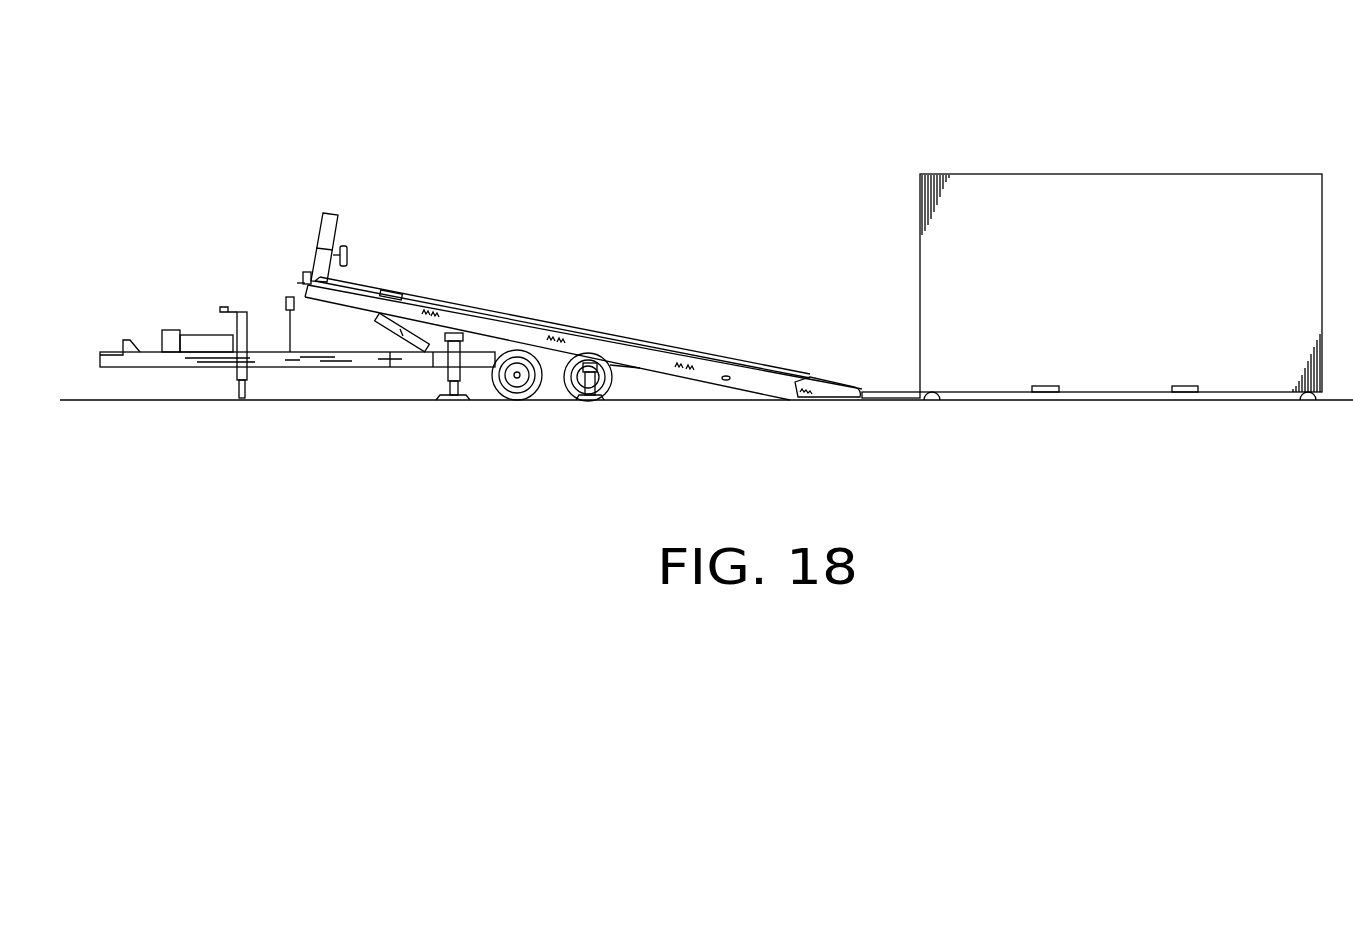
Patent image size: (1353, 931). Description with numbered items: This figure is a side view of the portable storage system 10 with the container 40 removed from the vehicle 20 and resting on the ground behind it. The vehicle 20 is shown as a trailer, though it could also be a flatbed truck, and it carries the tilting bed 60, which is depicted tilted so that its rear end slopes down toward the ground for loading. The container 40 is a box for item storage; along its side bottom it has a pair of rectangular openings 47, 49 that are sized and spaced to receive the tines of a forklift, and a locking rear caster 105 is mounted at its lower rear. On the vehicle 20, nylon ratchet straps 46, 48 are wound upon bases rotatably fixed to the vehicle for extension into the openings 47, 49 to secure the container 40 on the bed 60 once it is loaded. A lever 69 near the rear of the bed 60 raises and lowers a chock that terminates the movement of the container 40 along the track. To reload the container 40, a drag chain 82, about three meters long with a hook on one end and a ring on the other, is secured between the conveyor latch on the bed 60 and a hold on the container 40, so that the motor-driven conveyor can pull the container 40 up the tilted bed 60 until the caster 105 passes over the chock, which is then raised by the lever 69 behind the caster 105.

The portable storage system 10 is at (670, 113).
The vehicle 20 is at (232, 258).
The container 40 is at (1132, 323).
The ratchet strap 46 is at (467, 400).
The rectangular opening 47 is at (1045, 386).
The ratchet strap 48 is at (600, 400).
The rectangular opening 49 is at (1185, 386).
The tilting bed 60 is at (650, 365).
The lever 69 is at (737, 377).
The drag chain 82 is at (893, 394).
The locking rear caster 105 is at (1322, 400).